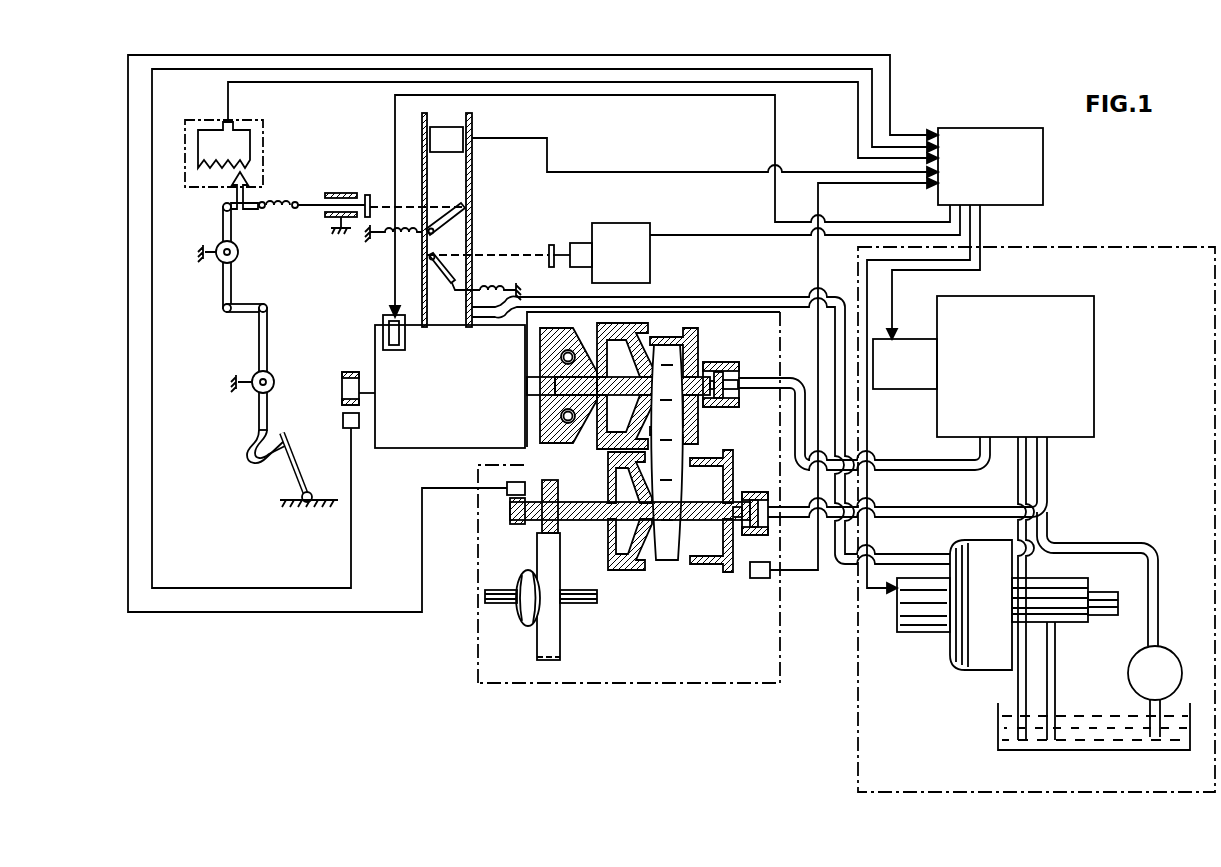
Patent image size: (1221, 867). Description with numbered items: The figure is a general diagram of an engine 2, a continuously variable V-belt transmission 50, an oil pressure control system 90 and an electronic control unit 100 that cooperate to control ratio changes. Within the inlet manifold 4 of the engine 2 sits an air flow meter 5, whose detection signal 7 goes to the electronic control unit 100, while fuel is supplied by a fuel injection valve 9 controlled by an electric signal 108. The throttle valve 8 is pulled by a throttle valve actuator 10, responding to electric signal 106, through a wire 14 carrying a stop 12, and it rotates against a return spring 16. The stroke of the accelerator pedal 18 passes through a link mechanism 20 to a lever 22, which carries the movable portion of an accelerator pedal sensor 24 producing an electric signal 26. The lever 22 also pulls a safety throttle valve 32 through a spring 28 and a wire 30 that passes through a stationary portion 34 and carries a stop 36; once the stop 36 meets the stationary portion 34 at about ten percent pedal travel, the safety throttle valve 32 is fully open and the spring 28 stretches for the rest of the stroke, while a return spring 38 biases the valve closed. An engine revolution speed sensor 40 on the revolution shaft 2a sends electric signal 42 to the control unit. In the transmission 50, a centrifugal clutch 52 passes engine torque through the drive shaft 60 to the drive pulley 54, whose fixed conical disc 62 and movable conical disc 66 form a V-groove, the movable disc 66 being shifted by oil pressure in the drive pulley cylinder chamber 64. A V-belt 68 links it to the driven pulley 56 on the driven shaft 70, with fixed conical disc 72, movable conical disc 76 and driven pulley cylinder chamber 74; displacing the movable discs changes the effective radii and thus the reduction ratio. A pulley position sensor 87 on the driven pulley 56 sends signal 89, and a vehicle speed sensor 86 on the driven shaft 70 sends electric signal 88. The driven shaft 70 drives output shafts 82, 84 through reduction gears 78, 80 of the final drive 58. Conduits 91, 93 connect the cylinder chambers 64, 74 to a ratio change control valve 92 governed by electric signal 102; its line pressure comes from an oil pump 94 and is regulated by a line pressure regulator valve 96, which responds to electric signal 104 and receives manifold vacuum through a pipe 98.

The engine 2 is at (397, 450).
The revolution shaft 2a is at (375, 380).
The inlet manifold 4 is at (472, 182).
The air flow meter 5 is at (463, 135).
The detection signal 7 is at (690, 172).
The throttle valve 8 is at (447, 283).
The fuel injection valve 9 is at (407, 335).
The throttle valve actuator 10 is at (618, 223).
The stop 12 is at (551, 245).
The wire 14 is at (500, 252).
The return spring 16 is at (495, 288).
The accelerator pedal 18 is at (290, 447).
The link mechanism 20 is at (276, 316).
The lever 22 is at (232, 202).
The accelerator pedal sensor 24 is at (263, 150).
The electric signal 26 is at (230, 100).
The spring 28 is at (278, 200).
The wire 30 is at (308, 208).
The safety throttle valve 32 is at (425, 237).
The stationary portion 34 is at (338, 192).
The stop 36 is at (368, 193).
The return spring 38 is at (390, 236).
The engine revolution speed sensor 40 is at (343, 418).
The electric signal 42 is at (349, 552).
The continuously variable V-belt transmission 50 is at (678, 684).
The centrifugal clutch 52 is at (558, 520).
The drive pulley 54 is at (708, 348).
The driven pulley 56 is at (713, 584).
The final drive 58 is at (524, 634).
The drive shaft 60 is at (594, 396).
The fixed conical disc 62 is at (700, 368).
The drive pulley cylinder chamber 64 is at (627, 352).
The movable conical disc 66 is at (640, 305).
The V-belt 68 is at (670, 452).
The driven shaft 70 is at (600, 522).
The fixed conical disc 72 is at (630, 572).
The driven pulley cylinder chamber 74 is at (725, 478).
The movable conical disc 76 is at (692, 575).
The reduction gear 78 is at (545, 478).
The reduction gear 80 is at (537, 560).
The output shaft 82 is at (490, 603).
The output shaft 84 is at (582, 603).
The vehicle speed sensor 86 is at (505, 492).
The pulley position sensor 87 is at (758, 578).
The electric signal 88 is at (449, 488).
The signal 89 is at (858, 185).
The oil pressure control system 90 is at (1135, 245).
The conduit 91 is at (900, 460).
The ratio change control valve 92 is at (937, 298).
The conduit 93 is at (940, 507).
The oil pump 94 is at (1165, 648).
The line pressure regulator valve 96 is at (1075, 625).
The pipe 98 is at (700, 298).
The electronic control unit 100 is at (1043, 165).
The electric signal 102 is at (980, 215).
The electric signal 104 is at (970, 240).
The electric signal 106 is at (748, 234).
The electric signal 108 is at (908, 222).